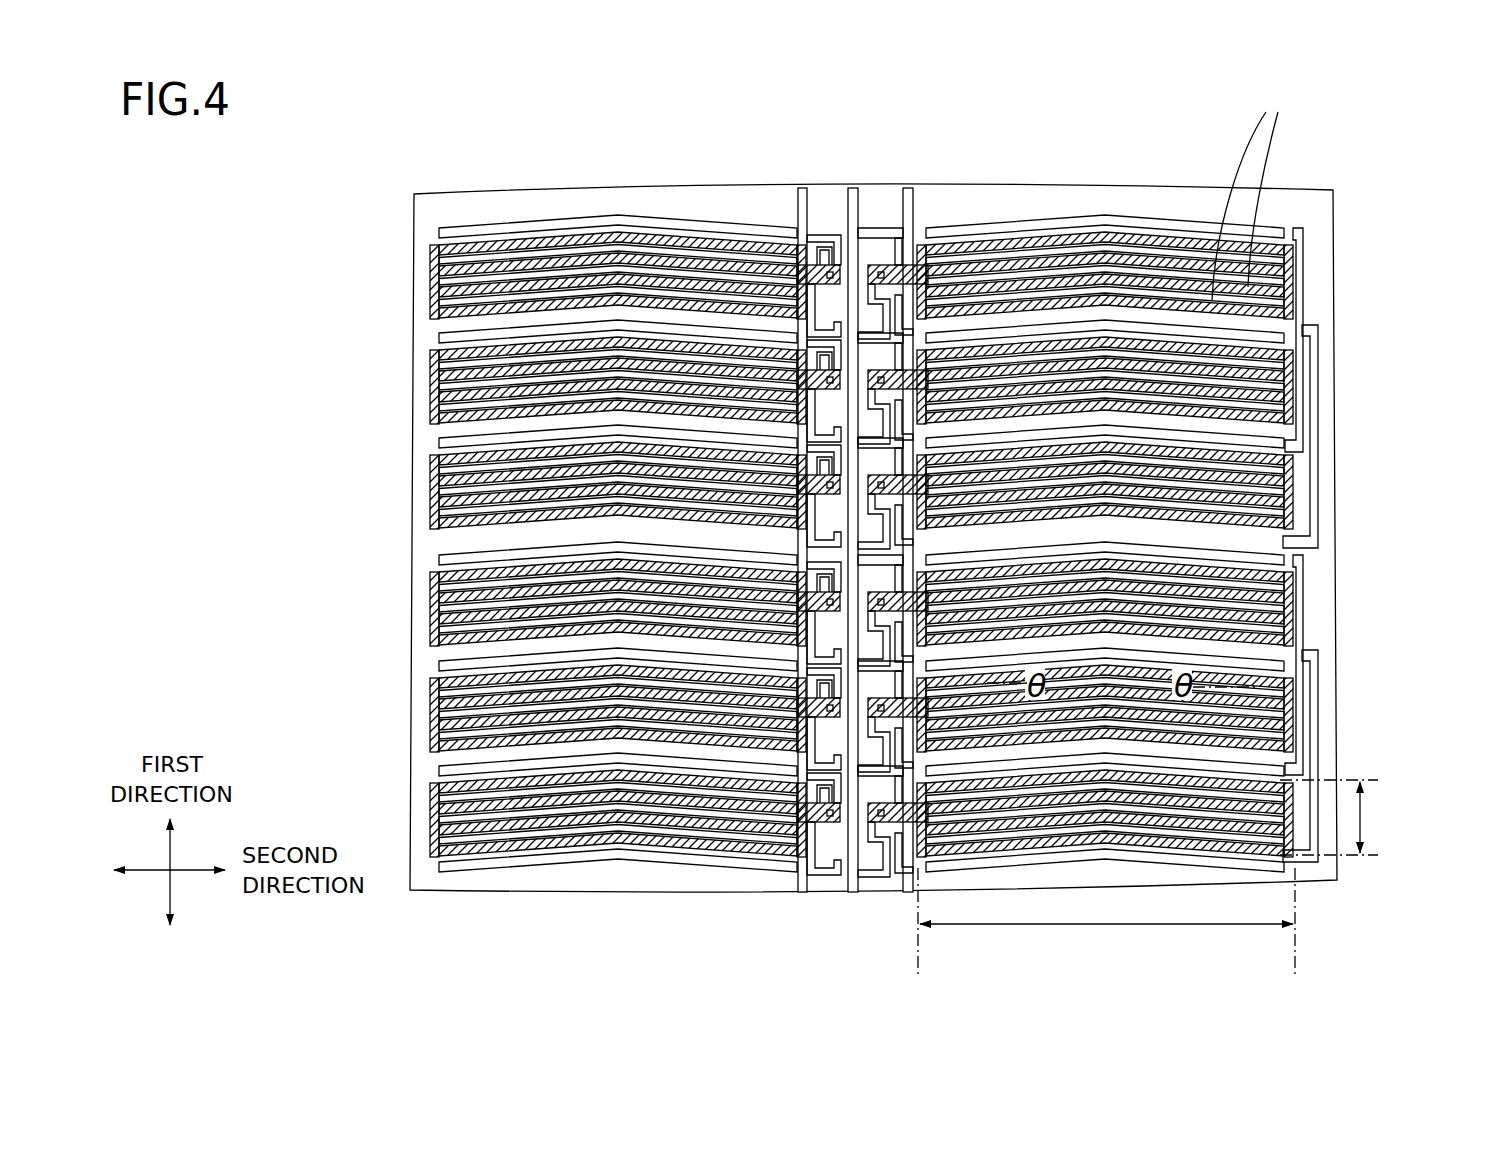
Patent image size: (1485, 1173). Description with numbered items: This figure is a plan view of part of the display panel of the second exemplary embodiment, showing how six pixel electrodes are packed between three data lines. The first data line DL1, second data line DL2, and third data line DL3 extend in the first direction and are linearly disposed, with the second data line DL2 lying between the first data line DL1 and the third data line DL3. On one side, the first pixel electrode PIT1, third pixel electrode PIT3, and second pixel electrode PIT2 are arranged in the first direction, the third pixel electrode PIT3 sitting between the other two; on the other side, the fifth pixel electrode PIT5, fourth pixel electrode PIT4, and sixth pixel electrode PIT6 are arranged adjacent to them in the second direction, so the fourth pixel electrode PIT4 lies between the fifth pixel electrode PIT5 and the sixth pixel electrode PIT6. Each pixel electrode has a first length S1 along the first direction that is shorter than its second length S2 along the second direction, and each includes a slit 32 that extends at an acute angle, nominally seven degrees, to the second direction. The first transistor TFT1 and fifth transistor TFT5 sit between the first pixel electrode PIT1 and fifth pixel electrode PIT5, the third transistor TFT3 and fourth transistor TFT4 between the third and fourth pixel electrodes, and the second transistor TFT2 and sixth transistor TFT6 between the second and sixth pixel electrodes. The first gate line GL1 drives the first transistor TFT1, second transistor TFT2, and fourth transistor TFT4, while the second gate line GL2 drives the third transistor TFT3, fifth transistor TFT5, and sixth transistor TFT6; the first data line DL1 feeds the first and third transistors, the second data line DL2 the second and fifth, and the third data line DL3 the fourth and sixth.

The first pixel electrode PIT1 is at (549, 238).
The second pixel electrode PIT2 is at (432, 492).
The third pixel electrode PIT3 is at (432, 378).
The fourth pixel electrode PIT4 is at (1285, 367).
The fifth pixel electrode PIT5 is at (1297, 273).
The sixth pixel electrode PIT6 is at (1295, 481).
The first transistor TFT1 is at (788, 212).
The second transistor TFT2 is at (810, 463).
The third transistor TFT3 is at (787, 358).
The fourth transistor TFT4 is at (928, 412).
The fifth transistor TFT5 is at (897, 310).
The sixth transistor TFT6 is at (935, 513).
The first data line DL1 is at (802, 192).
The second data line DL2 is at (851, 192).
The third data line DL3 is at (908, 192).
The first gate line GL1 is at (1302, 293).
The second gate line GL2 is at (1319, 417).
The slit 32 is at (1252, 190).
The first length S1 is at (1340, 817).
The second length S2 is at (1106, 921).